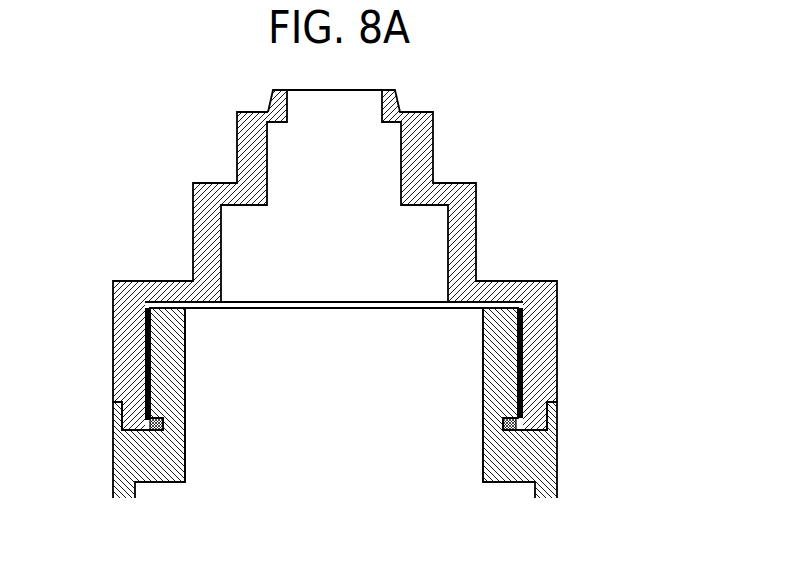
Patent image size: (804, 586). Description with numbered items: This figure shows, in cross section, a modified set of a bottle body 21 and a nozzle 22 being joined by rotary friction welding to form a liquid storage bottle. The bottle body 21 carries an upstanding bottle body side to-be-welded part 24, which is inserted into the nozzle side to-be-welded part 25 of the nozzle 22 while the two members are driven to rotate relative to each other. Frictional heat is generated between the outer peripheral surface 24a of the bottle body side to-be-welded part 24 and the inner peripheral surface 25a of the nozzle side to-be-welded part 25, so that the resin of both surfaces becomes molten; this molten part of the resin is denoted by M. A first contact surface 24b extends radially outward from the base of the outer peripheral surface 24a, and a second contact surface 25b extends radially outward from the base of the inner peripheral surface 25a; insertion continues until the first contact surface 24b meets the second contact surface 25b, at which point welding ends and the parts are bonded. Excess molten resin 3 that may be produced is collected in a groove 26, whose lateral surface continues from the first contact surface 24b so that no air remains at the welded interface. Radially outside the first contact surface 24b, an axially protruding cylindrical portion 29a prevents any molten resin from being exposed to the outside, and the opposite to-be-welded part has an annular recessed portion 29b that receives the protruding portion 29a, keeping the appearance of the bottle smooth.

The bottle body 21 is at (613, 506).
The nozzle 22 is at (541, 180).
The bottle body side to-be-welded part 24 is at (168, 333).
The outer peripheral surface 24a is at (150, 385).
The first contact surface 24b is at (527, 426).
The nozzle side to-be-welded part 25 is at (547, 323).
The inner peripheral surface 25a is at (520, 378).
The second contact surface 25b is at (535, 432).
The groove 26 is at (157, 428).
The protruding portion 29a is at (557, 412).
The annular recessed portion 29b is at (553, 422).
The molten resin 3 is at (163, 422).
The molten part M is at (552, 282).